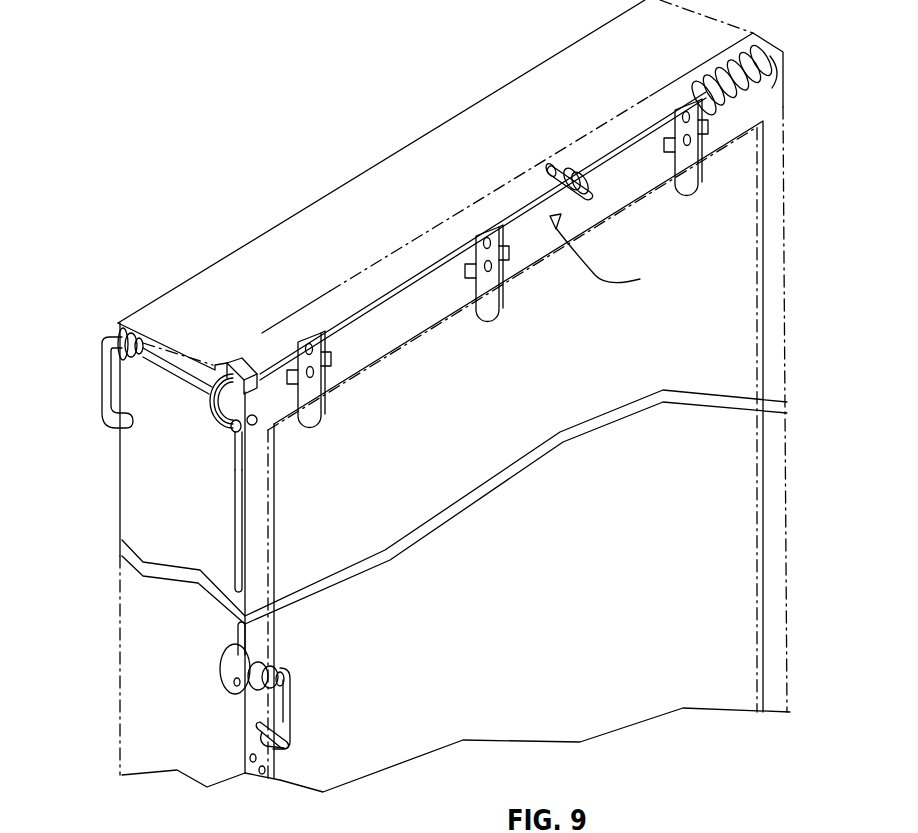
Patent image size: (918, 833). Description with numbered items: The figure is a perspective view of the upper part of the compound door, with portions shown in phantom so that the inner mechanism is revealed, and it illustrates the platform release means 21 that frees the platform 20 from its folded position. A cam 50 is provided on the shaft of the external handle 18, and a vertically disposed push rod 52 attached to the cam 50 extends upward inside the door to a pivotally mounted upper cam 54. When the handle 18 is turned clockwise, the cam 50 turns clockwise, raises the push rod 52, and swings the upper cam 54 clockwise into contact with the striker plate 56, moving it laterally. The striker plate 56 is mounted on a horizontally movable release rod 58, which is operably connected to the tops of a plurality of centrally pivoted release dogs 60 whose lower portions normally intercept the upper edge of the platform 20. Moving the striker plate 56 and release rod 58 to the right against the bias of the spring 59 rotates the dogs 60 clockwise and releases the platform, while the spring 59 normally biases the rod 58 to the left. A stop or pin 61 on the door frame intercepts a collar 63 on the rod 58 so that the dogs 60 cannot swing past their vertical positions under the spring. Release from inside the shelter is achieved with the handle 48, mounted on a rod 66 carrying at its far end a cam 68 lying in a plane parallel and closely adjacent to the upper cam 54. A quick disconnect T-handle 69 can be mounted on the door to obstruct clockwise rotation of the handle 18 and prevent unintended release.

The external handle 18 is at (285, 717).
The platform 20 is at (618, 706).
The platform release means 21 is at (609, 253).
The handle 48 is at (102, 372).
The cam 50 is at (227, 682).
The push rod 52 is at (233, 552).
The upper cam 54 is at (220, 434).
The striker plate 56 is at (249, 360).
The release rod 58 is at (537, 208).
The spring 59 is at (778, 64).
The release dogs 60 is at (697, 182).
The stop or pin 61 is at (549, 167).
The collar 63 is at (582, 168).
The rod 66 is at (177, 368).
The cam 68 is at (210, 414).
The quick disconnect T-handle 69 is at (258, 735).